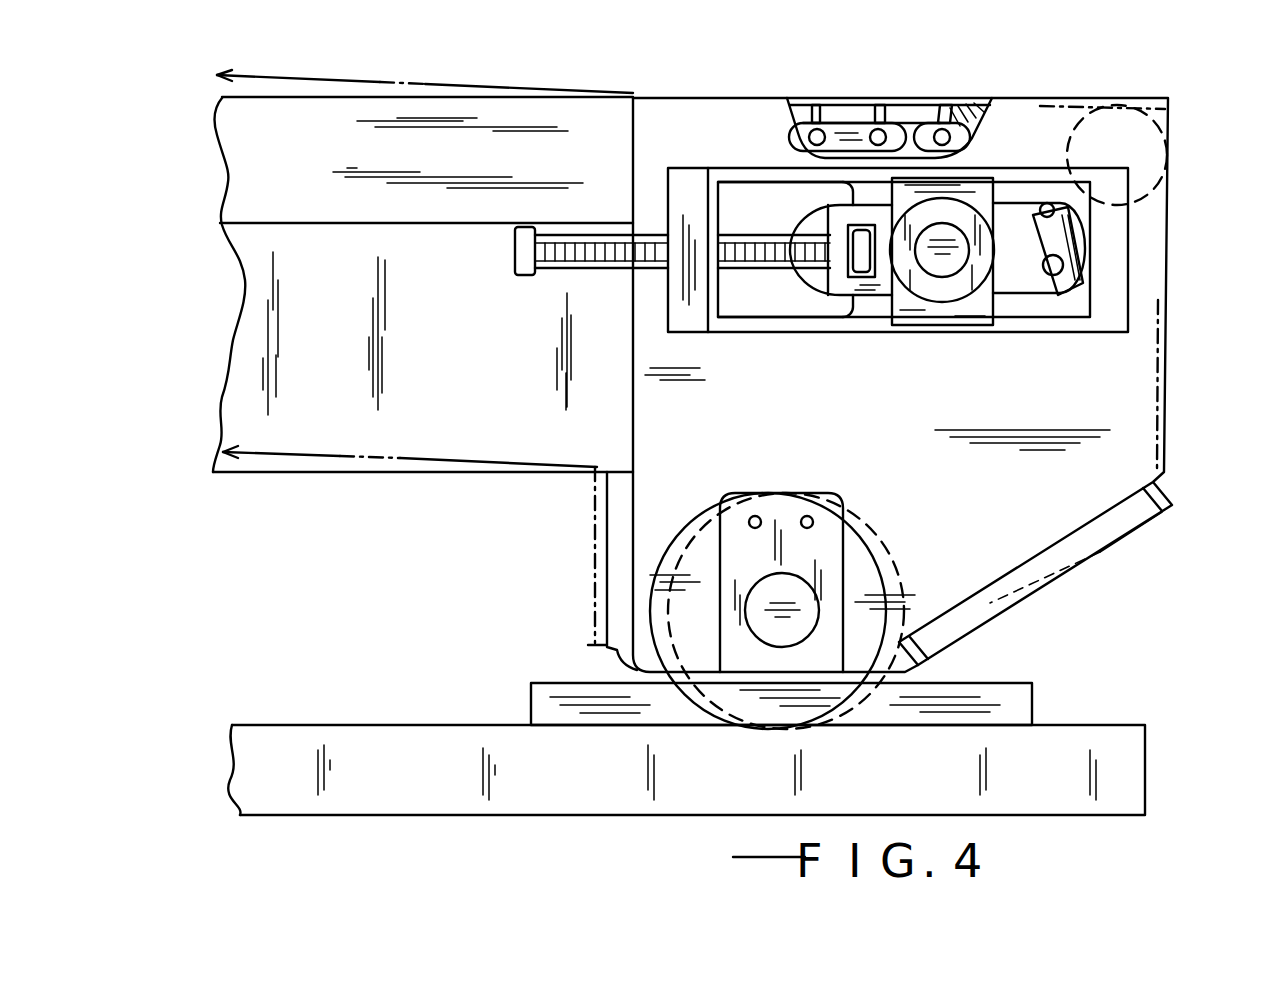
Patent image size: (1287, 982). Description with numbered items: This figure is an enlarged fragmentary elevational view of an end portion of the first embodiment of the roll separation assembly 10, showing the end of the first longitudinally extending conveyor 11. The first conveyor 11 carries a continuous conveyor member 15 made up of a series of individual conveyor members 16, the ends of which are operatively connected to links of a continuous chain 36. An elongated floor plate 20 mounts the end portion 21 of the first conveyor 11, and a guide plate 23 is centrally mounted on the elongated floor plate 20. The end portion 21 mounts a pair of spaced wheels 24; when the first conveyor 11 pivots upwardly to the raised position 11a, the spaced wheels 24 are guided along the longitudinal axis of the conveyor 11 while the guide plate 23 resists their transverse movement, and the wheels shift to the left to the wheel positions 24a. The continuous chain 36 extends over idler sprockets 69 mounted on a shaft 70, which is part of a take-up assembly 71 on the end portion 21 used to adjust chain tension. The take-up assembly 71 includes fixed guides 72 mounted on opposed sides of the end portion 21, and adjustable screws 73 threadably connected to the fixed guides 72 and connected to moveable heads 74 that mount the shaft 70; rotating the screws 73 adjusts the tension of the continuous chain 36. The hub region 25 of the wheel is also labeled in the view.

The roll separation assembly 10 is at (507, 93).
The first longitudinally extending conveyor 11 is at (802, 100).
The raised position of the first conveyor 11a is at (343, 82).
The continuous conveyor member 15 is at (932, 90).
The conveyor members 16 is at (843, 105).
The continuous chain 36 is at (952, 118).
The elongated floor plate 20 is at (1150, 726).
The end portion of the first conveyor 21 is at (1167, 397).
The guide plate 23 is at (1013, 683).
The spaced wheels 24 is at (860, 698).
The wheel positions 24a is at (687, 527).
The hub 25 is at (780, 573).
The idler sprockets 69 is at (1017, 213).
The shaft 70 is at (943, 277).
The take-up assembly 71 is at (898, 333).
The fixed guides 72 is at (762, 335).
The adjustable screws 73 is at (648, 232).
The moveable heads 74 is at (978, 178).